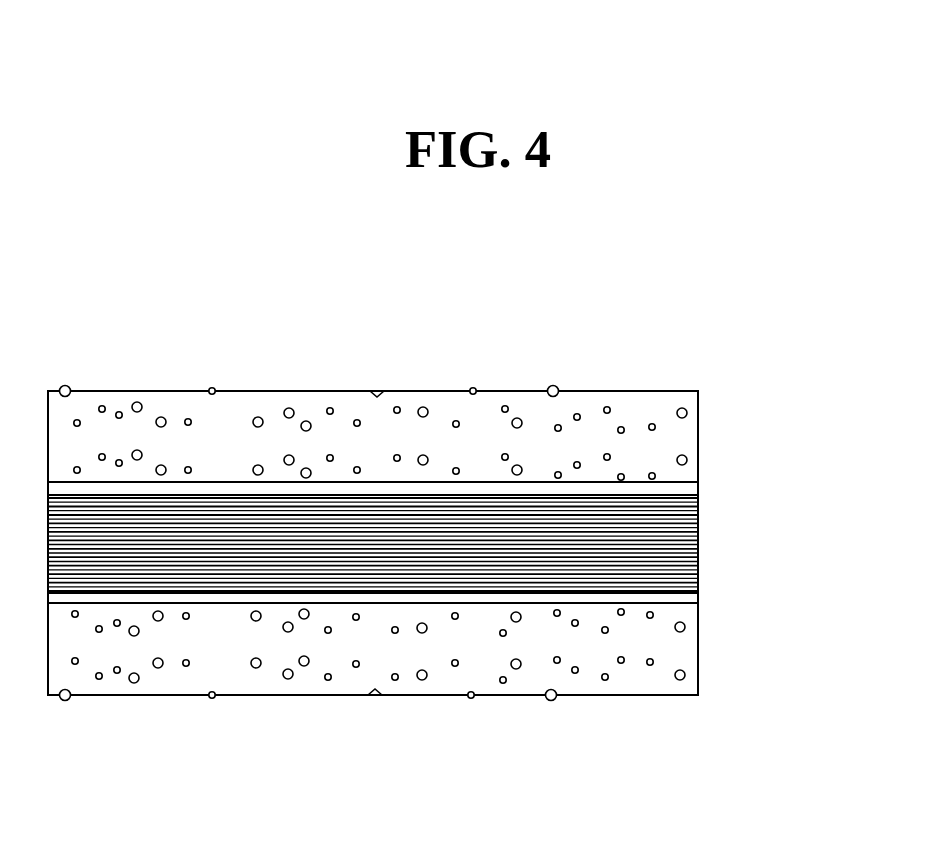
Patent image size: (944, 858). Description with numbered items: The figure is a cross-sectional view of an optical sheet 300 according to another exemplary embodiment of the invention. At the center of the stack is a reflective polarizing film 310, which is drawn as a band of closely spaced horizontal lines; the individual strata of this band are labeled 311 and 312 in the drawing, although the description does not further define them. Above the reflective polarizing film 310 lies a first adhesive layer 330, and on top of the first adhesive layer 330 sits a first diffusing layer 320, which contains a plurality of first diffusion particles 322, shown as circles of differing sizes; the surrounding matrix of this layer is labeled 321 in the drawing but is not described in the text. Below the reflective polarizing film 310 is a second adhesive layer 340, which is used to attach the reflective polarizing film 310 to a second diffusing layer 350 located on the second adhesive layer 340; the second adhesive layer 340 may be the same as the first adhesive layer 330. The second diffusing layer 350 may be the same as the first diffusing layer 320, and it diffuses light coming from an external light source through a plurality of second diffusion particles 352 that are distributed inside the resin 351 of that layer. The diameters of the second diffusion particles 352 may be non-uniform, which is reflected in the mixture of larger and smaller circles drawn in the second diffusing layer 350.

The optical sheet 300 is at (103, 303).
The reflective polarizing film 310 is at (456, 548).
The carbon fibers 311 is at (693, 520).
The carbon fiber gaps / fibers of second orientation 312 is at (693, 523).
The first diffusing layer 320 is at (802, 378).
The first porous layer matrix 321 is at (673, 433).
The first diffusion particles 322 is at (687, 411).
The first adhesive layer 330 is at (672, 488).
The second adhesive layer 340 is at (678, 602).
The second diffusing layer 350 is at (802, 600).
The resin 351 is at (670, 642).
The second diffusion particles 352 is at (686, 626).